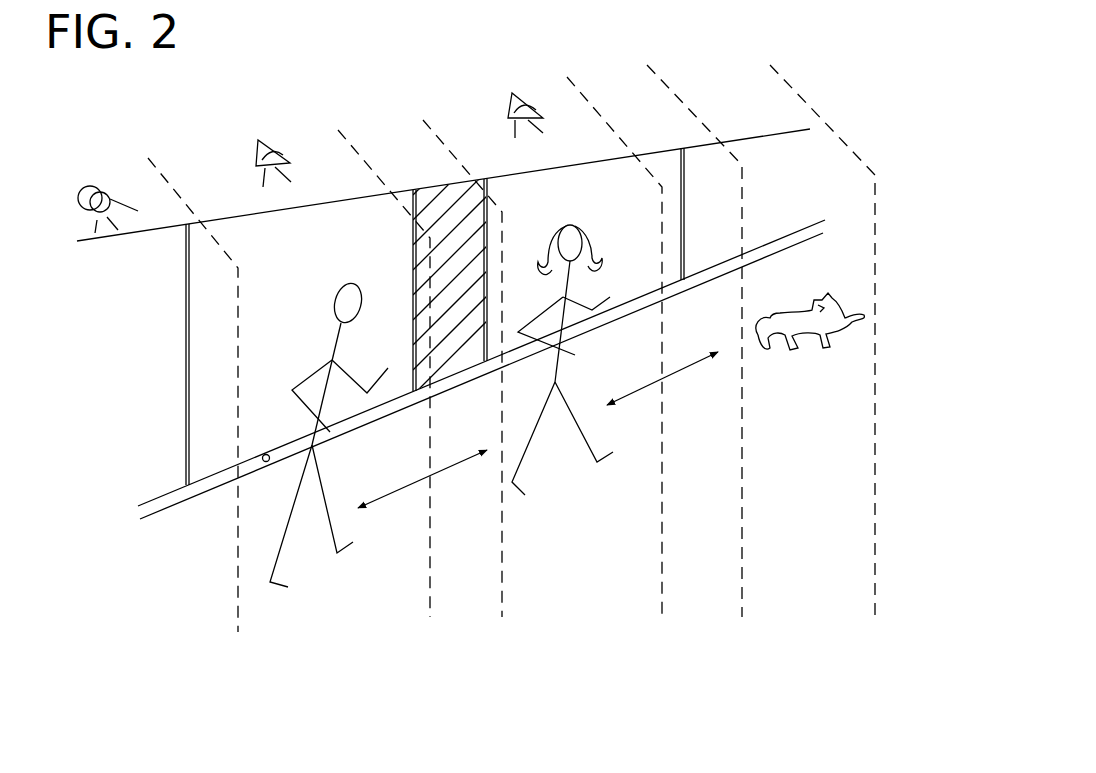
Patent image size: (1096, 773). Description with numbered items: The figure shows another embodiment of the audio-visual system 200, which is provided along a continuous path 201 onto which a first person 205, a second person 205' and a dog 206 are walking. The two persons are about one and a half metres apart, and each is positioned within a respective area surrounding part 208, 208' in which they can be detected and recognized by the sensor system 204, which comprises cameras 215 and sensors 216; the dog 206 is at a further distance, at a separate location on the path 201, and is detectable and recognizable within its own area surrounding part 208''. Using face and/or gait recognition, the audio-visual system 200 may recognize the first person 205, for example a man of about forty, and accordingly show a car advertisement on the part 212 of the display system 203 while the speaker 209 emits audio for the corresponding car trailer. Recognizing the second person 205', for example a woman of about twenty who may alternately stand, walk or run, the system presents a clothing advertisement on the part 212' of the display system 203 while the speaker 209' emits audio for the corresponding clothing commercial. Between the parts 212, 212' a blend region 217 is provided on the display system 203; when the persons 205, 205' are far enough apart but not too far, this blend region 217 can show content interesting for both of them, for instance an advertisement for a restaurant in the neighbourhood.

The audio-visual system 200 is at (142, 108).
The continuous path 201 is at (174, 598).
The display system 203 is at (120, 383).
The sensor system 204 is at (132, 518).
The first person 205 is at (329, 451).
The second person 205' is at (562, 379).
The dog 206 is at (808, 342).
The area surrounding part 208 is at (335, 419).
The area surrounding part 208' is at (588, 392).
The area surrounding part 208'' is at (761, 386).
The speaker 209 is at (270, 132).
The speaker 209' is at (544, 89).
The part of the display system 212 is at (193, 393).
The part of the display system 212' is at (462, 345).
The camera 215 is at (84, 188).
The sensor 216 is at (267, 468).
The blend region 217 is at (439, 192).